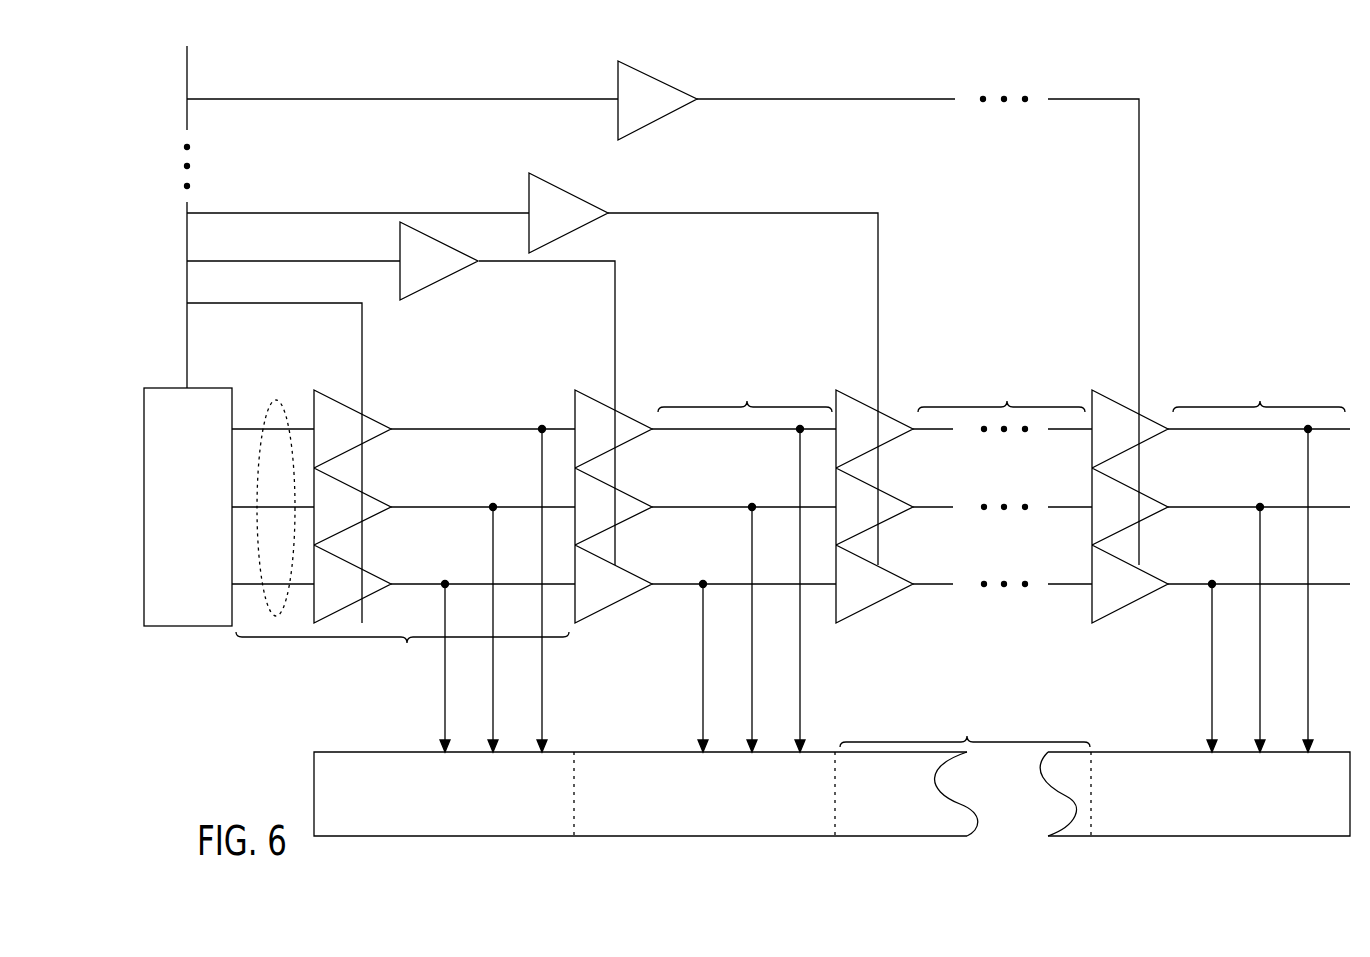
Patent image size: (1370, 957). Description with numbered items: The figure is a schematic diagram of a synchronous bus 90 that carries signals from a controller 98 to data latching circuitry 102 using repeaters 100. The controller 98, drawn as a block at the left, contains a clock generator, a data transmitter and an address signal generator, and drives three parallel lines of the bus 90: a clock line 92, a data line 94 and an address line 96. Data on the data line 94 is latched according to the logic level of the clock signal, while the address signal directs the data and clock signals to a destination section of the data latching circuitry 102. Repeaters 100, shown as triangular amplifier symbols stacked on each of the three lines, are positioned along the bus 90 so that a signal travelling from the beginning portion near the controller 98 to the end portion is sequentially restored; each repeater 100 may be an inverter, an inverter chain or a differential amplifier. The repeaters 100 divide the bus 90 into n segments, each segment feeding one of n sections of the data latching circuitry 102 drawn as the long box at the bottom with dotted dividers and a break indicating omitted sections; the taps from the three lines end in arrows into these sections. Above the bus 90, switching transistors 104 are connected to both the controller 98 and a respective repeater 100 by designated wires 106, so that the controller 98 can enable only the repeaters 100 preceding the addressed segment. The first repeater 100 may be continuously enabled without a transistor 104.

The synchronous bus 90 is at (278, 400).
The clock line 92 is at (470, 429).
The data line 94 is at (461, 507).
The address line 96 is at (431, 584).
The controller 98 is at (204, 388).
The repeaters 100 is at (741, 506).
The data latching circuitry 102 is at (819, 772).
The switching transistor 104 is at (442, 180).
The designated wire 106 is at (693, 360).